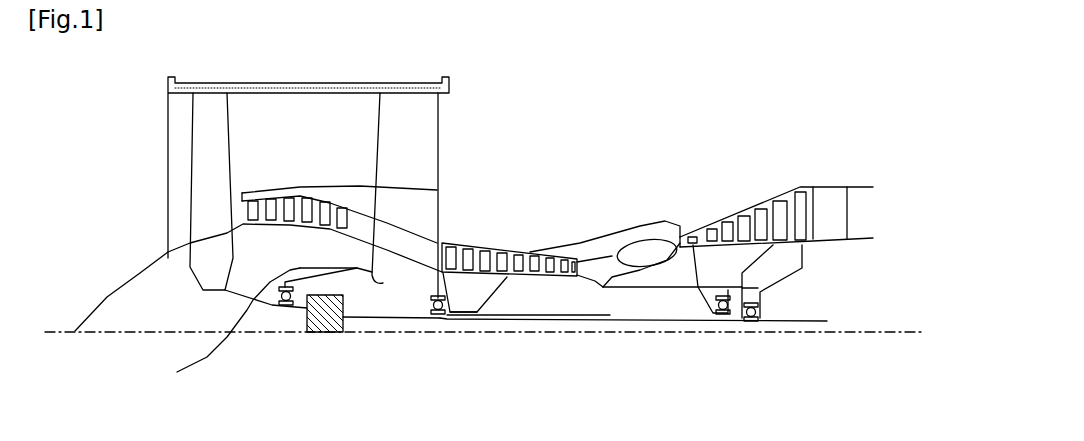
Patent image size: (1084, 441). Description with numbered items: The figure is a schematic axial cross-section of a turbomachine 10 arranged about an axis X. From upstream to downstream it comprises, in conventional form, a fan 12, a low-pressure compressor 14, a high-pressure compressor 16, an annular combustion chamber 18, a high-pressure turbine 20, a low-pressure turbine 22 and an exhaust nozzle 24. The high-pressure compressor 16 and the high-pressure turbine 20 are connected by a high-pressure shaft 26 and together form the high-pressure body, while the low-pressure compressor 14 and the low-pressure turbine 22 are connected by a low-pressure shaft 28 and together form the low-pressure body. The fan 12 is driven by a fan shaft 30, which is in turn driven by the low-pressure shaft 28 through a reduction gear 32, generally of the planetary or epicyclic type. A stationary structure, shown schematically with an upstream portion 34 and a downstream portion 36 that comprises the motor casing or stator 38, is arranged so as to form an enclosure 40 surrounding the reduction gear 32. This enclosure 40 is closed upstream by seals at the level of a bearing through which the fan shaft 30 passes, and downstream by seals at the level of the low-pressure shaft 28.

The turbomachine 10 is at (562, 152).
The fan 12 is at (200, 154).
The low-pressure compressor 14 is at (265, 193).
The high-pressure compressor 16 is at (470, 245).
The annular combustion chamber 18 is at (634, 253).
The high-pressure turbine 20 is at (684, 243).
The low-pressure turbine 22 is at (800, 188).
The exhaust nozzle 24 is at (857, 212).
The high-pressure shaft 26 is at (625, 287).
The low-pressure shaft 28 is at (540, 318).
The fan shaft 30 is at (265, 305).
The reduction gear 32 is at (323, 317).
The upstream portion 34 is at (177, 372).
The downstream portion 36 is at (385, 283).
The motor casing or stator 38 is at (357, 256).
The enclosure 40 is at (355, 287).
The axis X is at (57, 332).